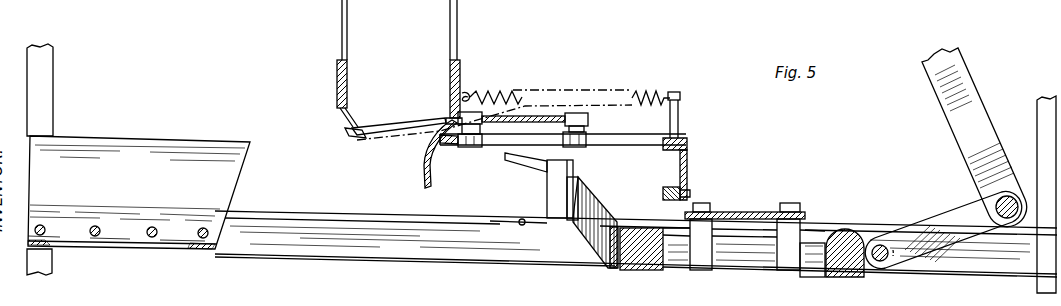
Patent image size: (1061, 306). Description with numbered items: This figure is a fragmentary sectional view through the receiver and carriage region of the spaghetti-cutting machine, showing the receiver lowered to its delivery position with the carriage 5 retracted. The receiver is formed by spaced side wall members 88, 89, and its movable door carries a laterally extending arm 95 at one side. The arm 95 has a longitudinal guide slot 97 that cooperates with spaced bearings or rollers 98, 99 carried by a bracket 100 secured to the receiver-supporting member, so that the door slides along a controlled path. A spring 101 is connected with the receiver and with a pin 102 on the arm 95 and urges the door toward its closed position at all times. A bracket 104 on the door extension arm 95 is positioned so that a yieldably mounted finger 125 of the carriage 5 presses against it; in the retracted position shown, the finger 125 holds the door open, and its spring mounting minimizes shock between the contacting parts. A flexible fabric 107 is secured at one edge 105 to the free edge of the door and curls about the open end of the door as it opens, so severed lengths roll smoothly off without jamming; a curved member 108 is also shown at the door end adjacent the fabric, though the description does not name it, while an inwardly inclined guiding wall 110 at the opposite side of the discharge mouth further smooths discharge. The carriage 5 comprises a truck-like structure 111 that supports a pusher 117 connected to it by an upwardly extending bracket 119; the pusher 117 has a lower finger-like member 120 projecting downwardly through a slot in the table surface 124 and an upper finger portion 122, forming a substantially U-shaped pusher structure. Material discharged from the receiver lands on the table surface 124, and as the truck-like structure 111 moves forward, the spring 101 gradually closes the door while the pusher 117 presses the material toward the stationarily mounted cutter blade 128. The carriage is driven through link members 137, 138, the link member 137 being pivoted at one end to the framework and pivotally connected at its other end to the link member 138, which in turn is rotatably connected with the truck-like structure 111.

The carriage 5 is at (818, 244).
The side wall member 88 is at (341, 20).
The side wall member 89 is at (458, 20).
The arm 95 is at (688, 140).
The guide slot 97 is at (644, 141).
The bearing or roller 98 is at (590, 136).
The bearing or roller 99 is at (478, 150).
The bracket 100 is at (536, 113).
The spring 101 is at (645, 92).
The pin 102 is at (679, 96).
The bracket 104 is at (690, 166).
The edge 105 is at (353, 142).
The fabric 107 is at (398, 126).
The hook 108 is at (447, 124).
The guiding wall 110 is at (350, 113).
The truck-like structure 111 is at (744, 237).
The pusher 117 is at (540, 192).
The bracket 119 is at (600, 234).
The finger-like member 120 is at (523, 226).
The finger portion 122 is at (517, 162).
The table surface 124 is at (352, 212).
The finger 125 is at (692, 197).
The cutter blade 128 is at (218, 129).
The link member 137 is at (964, 93).
The link member 138 is at (923, 221).